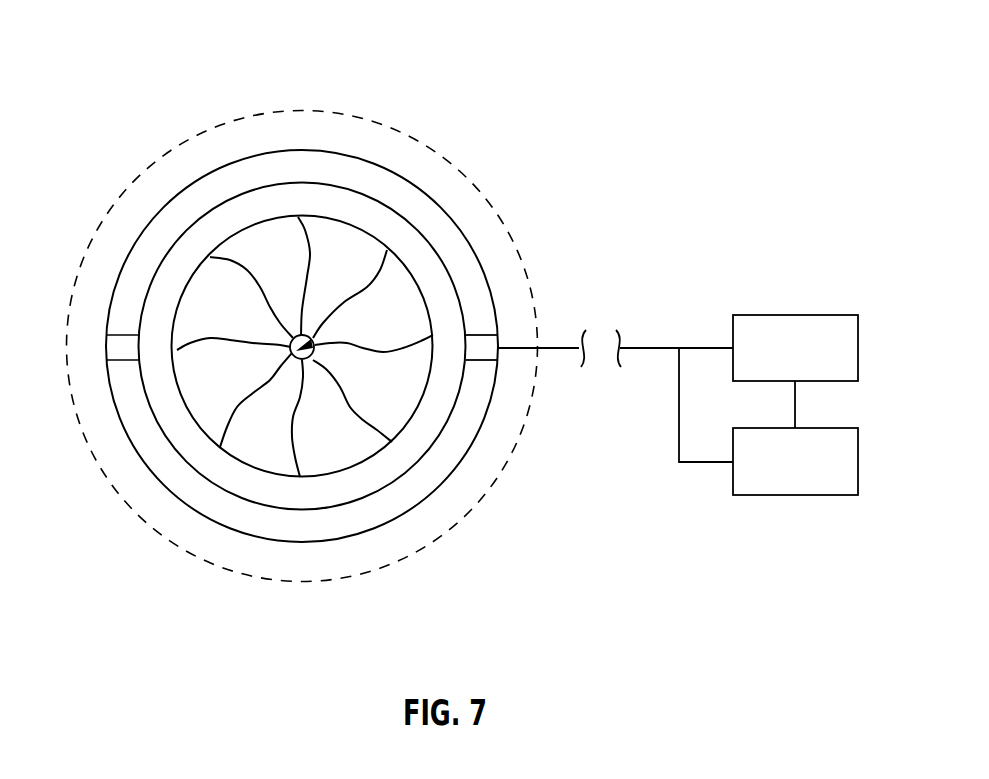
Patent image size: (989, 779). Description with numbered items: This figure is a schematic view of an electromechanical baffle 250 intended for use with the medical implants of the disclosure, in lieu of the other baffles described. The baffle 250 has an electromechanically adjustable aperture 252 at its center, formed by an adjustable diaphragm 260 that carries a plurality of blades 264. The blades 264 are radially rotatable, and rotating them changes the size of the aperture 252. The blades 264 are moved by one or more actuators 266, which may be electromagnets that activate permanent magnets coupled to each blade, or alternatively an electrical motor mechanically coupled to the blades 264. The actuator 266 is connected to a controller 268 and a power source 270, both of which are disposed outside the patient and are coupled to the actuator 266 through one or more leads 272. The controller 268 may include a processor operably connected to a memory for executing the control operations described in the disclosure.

The baffle 250 is at (592, 46).
The electromechanically adjustable aperture 252 is at (308, 343).
The adjustable diaphragm 260 is at (432, 475).
The blades 264 is at (193, 400).
The actuator 266 is at (485, 345).
The controller 268 is at (807, 330).
The power source 270 is at (792, 475).
The leads 272 is at (702, 347).